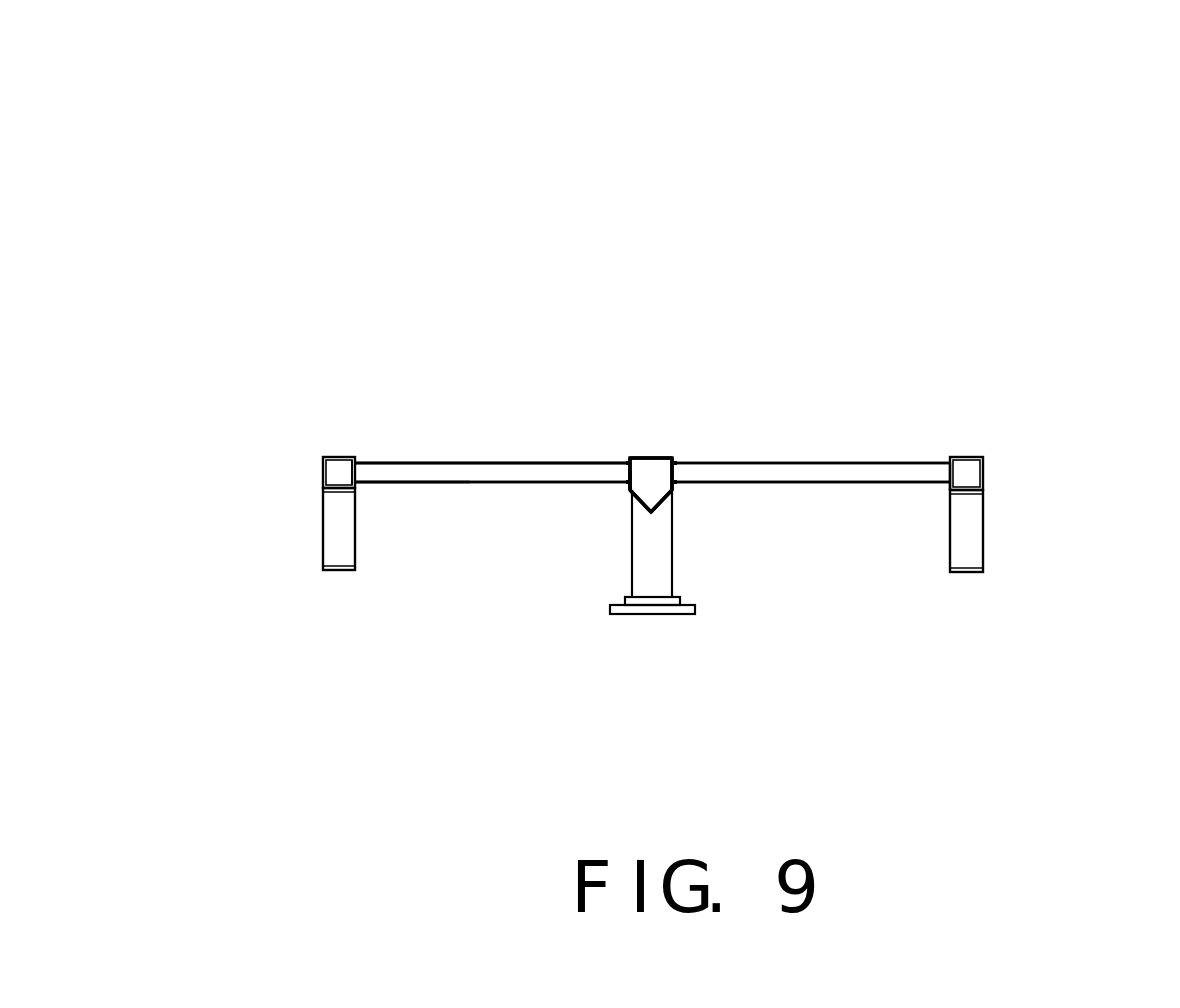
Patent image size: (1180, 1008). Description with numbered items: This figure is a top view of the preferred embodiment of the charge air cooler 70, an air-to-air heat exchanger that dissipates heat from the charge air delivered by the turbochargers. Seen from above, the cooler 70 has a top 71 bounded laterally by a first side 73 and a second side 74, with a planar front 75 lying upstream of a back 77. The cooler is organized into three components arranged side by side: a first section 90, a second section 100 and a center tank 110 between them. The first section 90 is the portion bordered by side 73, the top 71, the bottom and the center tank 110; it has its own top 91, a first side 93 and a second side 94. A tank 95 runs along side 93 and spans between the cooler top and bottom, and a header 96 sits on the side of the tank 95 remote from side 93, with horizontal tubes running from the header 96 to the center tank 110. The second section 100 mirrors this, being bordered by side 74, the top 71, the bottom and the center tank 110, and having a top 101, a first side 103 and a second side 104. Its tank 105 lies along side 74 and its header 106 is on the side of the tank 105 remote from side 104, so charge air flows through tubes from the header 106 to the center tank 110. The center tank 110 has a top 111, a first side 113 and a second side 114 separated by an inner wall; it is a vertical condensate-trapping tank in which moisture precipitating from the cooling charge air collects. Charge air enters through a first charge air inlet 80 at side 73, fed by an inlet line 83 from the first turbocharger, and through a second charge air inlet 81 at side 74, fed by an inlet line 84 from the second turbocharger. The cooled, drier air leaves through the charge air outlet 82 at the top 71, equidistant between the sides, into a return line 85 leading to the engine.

The charge air cooler 70 is at (770, 207).
The top 71 is at (493, 475).
The first side 73 is at (323, 473).
The second side 74 is at (983, 475).
The front 75 is at (476, 483).
The back 77 is at (470, 463).
The first charge air inlet 80 is at (323, 493).
The second charge air inlet 81 is at (961, 490).
The charge air outlet 82 is at (678, 463).
The inlet line 83 is at (335, 573).
The inlet line 84 is at (968, 572).
The return line 85 is at (676, 567).
The first section 90 is at (527, 463).
The top 91 is at (422, 473).
The first side 93 is at (355, 465).
The second side 94 is at (630, 488).
The tank 95 is at (337, 462).
The header 96 is at (341, 463).
The second section 100 is at (874, 463).
The top 101 is at (777, 474).
The first side 103 is at (952, 480).
The second side 104 is at (674, 484).
The tank 105 is at (966, 474).
The header 106 is at (948, 466).
The center tank 110 is at (645, 472).
The top 111 is at (642, 462).
The first side 113 is at (629, 469).
The second side 114 is at (673, 463).